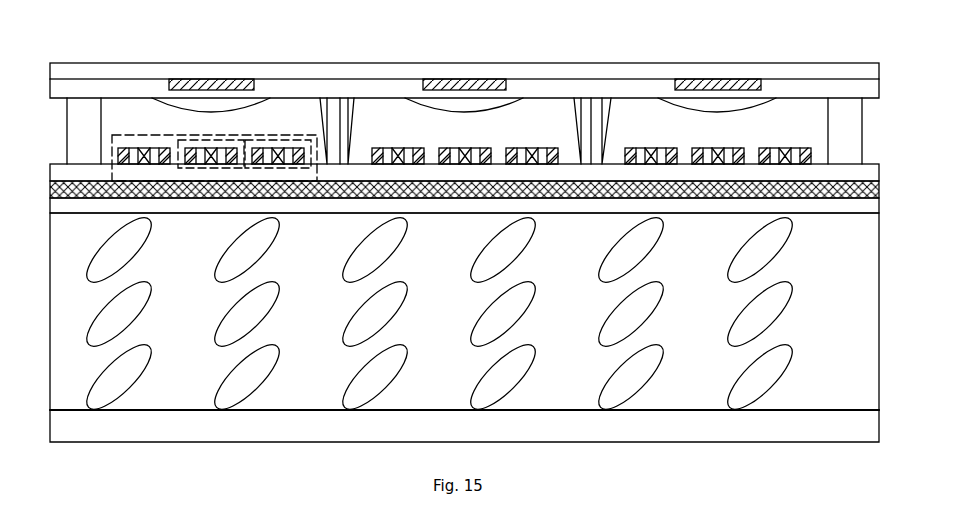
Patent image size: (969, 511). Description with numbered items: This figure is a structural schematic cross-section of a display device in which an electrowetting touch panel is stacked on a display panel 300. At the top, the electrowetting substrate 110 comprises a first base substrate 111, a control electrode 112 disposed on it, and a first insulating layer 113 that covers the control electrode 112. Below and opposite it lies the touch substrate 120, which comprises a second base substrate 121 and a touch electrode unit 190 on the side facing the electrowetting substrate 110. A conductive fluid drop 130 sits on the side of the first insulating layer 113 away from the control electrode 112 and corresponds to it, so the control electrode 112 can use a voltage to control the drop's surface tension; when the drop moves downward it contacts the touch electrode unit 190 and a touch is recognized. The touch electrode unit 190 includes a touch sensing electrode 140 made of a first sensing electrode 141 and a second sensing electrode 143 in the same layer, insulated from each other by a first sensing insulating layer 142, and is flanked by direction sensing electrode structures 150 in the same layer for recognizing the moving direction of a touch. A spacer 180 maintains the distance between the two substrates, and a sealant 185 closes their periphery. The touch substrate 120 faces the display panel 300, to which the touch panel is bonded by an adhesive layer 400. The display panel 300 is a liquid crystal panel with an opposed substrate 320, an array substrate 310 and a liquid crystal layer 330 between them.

The electrowetting substrate 110 is at (488, 68).
The first base substrate 111 is at (83, 73).
The control electrode 112 is at (443, 87).
The first insulating layer 113 is at (787, 90).
The touch substrate 120 is at (465, 103).
The second base substrate 121 is at (85, 175).
The conductive fluid drop 130 is at (253, 83).
The touch sensing electrode 140 is at (235, 100).
The first sensing electrode 141 is at (462, 155).
The first sensing insulating layer 142 is at (450, 158).
The second sensing electrode 143 is at (483, 157).
The direction sensing electrode structure 150 is at (278, 140).
The spacer 180 is at (587, 110).
The sealant 185 is at (843, 137).
The touch electrode unit 190 is at (152, 135).
The display panel 300 is at (490, 320).
The array substrate 310 is at (488, 426).
The opposed substrate 320 is at (853, 209).
The liquid crystal layer 330 is at (853, 266).
The adhesive layer 400 is at (862, 188).